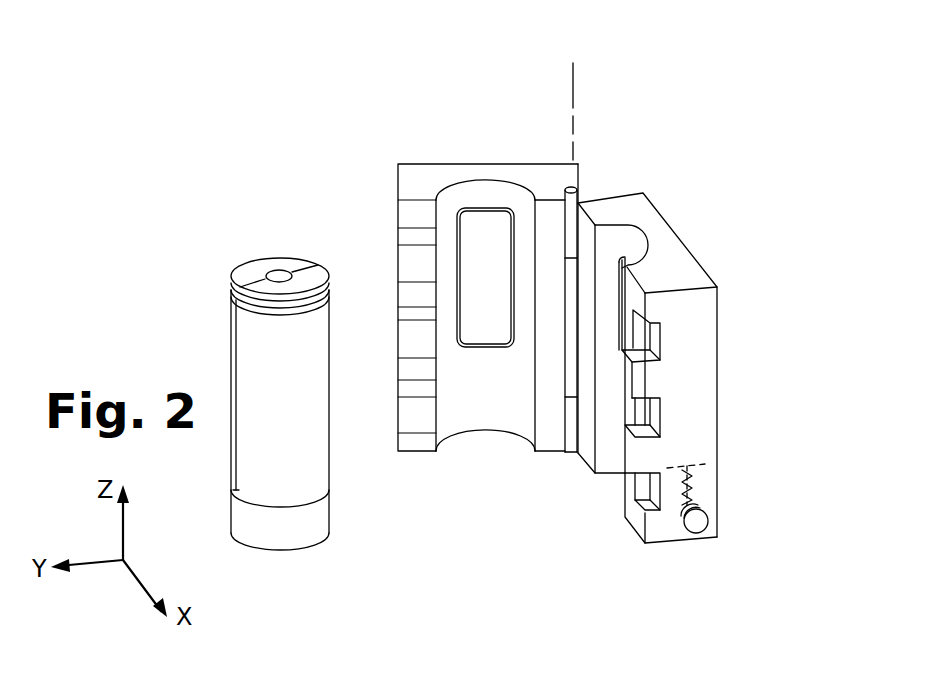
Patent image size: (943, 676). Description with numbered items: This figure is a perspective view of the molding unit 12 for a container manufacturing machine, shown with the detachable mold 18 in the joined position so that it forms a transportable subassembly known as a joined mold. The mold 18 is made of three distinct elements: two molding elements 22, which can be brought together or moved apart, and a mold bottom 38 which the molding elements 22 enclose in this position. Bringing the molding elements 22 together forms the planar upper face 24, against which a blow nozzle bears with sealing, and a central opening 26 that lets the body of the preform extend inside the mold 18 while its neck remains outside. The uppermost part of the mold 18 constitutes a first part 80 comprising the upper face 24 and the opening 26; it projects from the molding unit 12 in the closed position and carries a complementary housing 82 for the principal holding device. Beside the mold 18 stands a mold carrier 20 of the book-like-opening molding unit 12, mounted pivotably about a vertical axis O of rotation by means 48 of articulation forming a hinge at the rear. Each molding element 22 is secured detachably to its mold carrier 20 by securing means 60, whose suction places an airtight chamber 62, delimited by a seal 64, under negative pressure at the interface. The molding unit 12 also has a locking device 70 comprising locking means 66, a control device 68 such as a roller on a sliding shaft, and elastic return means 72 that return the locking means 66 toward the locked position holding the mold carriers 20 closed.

The molding unit 12 is at (705, 163).
The mold 18 is at (158, 229).
The mold carrier 20 is at (422, 172).
The molding element 22 is at (233, 392).
The upper face 24 is at (242, 262).
The opening 26 is at (271, 270).
The mold bottom 38 is at (283, 522).
The means of articulation 48 is at (572, 383).
The securing means 60 is at (497, 210).
The airtight chamber 62 is at (473, 240).
The seal 64 is at (490, 347).
The locking means 66 is at (637, 453).
The control device 68 is at (697, 525).
The locking device 70 is at (744, 455).
The elastic return means 72 is at (695, 490).
The first part 80 is at (222, 300).
The complementary housing 82 is at (313, 308).
The axis of rotation O is at (573, 73).